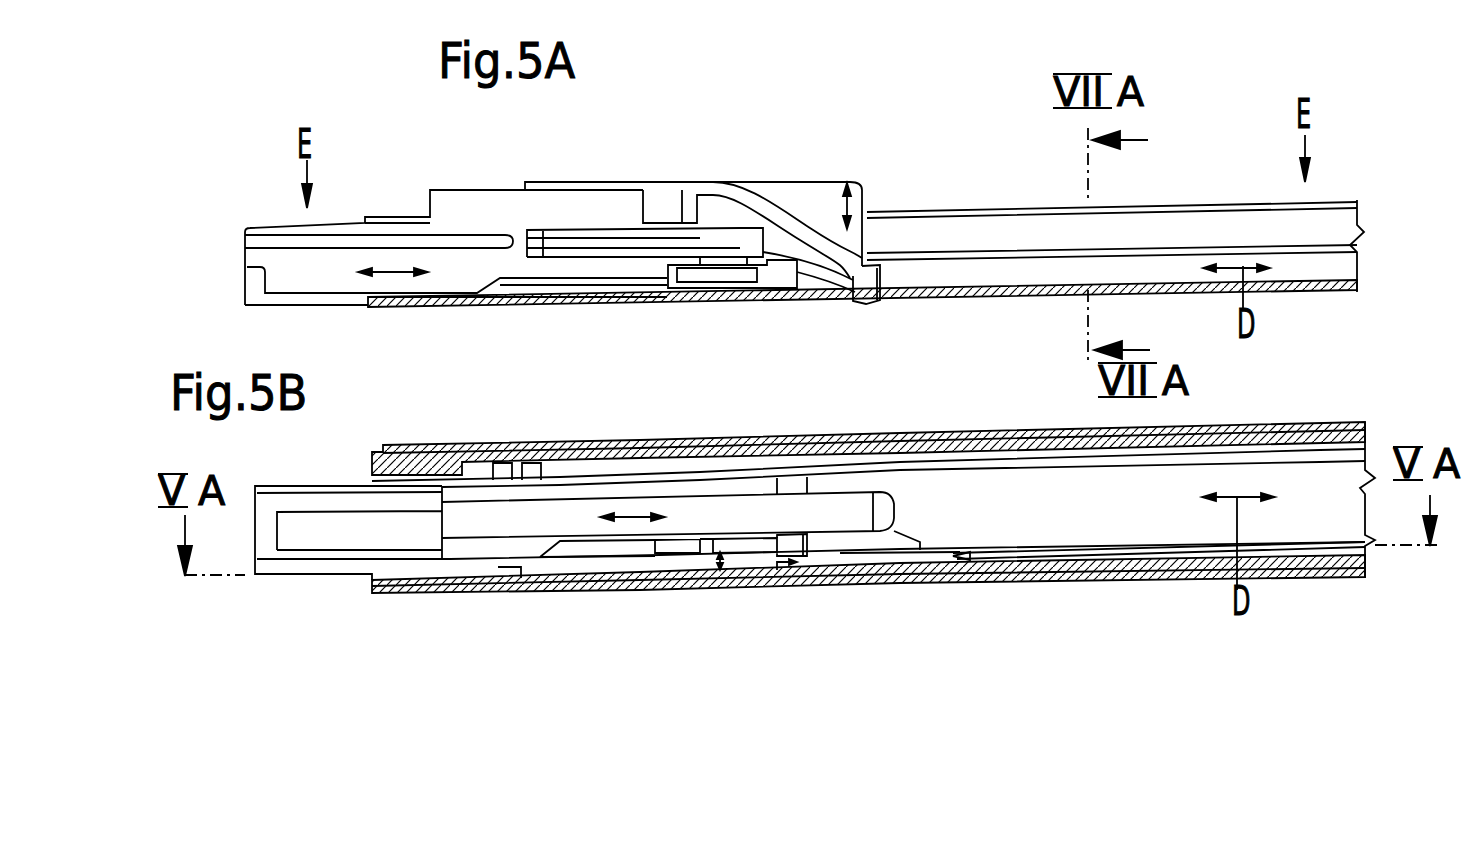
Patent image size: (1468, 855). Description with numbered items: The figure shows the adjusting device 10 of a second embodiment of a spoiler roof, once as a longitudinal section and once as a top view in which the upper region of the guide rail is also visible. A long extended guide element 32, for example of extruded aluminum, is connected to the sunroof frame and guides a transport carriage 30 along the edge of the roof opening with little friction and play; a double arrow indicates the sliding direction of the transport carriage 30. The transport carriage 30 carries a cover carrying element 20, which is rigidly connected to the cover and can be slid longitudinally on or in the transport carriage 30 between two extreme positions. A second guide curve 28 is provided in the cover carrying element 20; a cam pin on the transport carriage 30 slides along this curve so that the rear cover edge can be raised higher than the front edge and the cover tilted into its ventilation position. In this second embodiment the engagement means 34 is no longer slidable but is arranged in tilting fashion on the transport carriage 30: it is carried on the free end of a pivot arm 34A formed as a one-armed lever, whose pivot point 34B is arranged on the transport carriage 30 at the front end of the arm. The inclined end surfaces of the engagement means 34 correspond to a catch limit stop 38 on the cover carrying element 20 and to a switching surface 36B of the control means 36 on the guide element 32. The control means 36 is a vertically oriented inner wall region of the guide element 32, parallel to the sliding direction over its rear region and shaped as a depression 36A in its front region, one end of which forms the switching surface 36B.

In FIG. 5A, the telescopic guide assembly 10 is at (863, 148).
In FIG. 5B, the telescopic guide assembly 10 is at (908, 500).
In FIG. 5A, the cover carrying element 20 is at (800, 190).
In FIG. 5B, the cover carrying element 20 is at (826, 512).
In FIG. 5A, the second guide curve 28 is at (747, 210).
In FIG. 5A, the transport carriage 30 is at (475, 200).
In FIG. 5B, the transport carriage 30 is at (322, 553).
In FIG. 5A, the guide element 32 is at (1008, 292).
In FIG. 5B, the guide element 32 is at (1043, 583).
In FIG. 5A, the engagement means 34 is at (711, 215).
In FIG. 5B, the engagement means 34 is at (737, 558).
In FIG. 5A, the pivot arm 34A is at (620, 252).
In FIG. 5B, the pivot arm 34A is at (632, 560).
In FIG. 5A, the pivot point 34B is at (537, 263).
In FIG. 5B, the pivot point 34B is at (547, 550).
In FIG. 5B, the control means 36 is at (1092, 552).
In FIG. 5B, the depression 36A is at (897, 556).
In FIG. 5B, the switching surface 36B is at (955, 561).
In FIG. 5A, the catch limit stop 38 is at (888, 292).
In FIG. 5B, the catch limit stop 38 is at (920, 545).